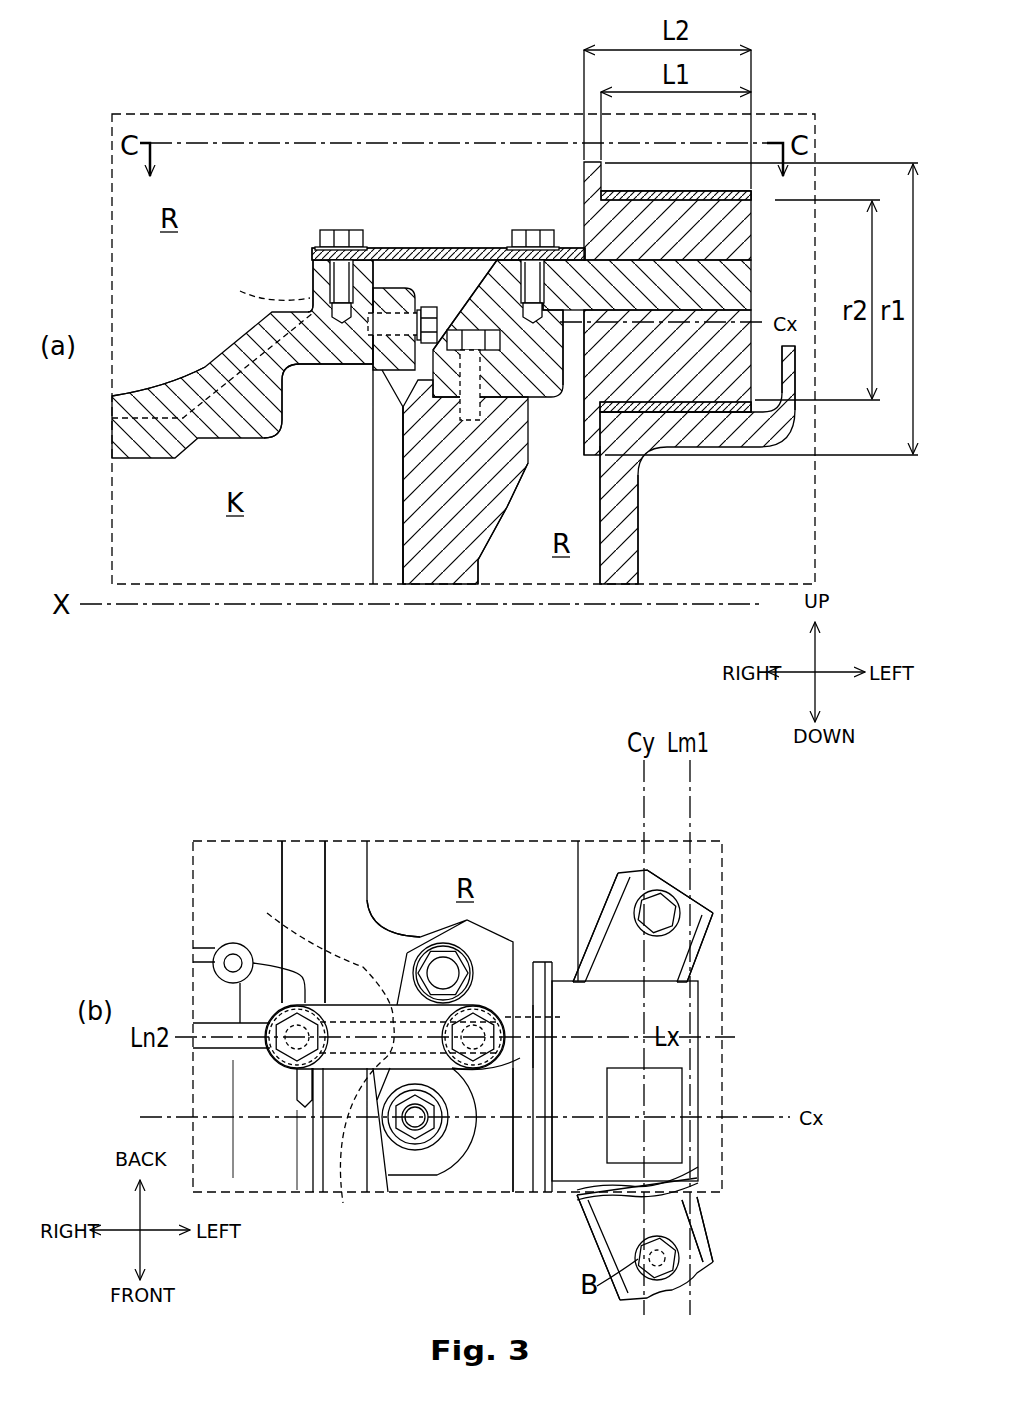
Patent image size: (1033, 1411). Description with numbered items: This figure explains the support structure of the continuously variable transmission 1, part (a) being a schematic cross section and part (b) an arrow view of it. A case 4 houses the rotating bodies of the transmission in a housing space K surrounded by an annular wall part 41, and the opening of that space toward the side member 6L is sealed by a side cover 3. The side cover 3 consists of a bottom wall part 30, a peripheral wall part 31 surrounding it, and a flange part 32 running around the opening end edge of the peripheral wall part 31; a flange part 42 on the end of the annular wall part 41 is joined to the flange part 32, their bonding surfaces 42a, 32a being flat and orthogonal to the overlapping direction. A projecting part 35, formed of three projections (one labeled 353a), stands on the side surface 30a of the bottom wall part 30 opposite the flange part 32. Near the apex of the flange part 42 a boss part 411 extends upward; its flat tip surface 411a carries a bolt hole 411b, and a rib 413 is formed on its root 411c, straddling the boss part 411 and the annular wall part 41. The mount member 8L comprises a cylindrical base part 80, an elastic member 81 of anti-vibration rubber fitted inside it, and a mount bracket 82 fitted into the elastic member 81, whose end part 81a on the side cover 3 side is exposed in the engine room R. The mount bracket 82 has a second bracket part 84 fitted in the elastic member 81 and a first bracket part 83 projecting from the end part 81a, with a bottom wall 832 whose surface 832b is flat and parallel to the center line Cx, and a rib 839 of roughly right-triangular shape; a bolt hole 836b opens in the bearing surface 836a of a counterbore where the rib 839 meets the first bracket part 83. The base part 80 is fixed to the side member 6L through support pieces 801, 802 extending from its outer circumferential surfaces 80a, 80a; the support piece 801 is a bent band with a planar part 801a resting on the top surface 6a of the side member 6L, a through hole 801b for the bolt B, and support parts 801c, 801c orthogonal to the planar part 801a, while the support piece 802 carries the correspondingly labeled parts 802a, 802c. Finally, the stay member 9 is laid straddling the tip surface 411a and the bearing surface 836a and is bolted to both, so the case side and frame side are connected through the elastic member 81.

The continuously variable transmission 1 is at (262, 110).
The side cover 3 is at (417, 586).
The case 4 is at (272, 586).
The top surface 6a is at (722, 386).
The side member 6L is at (628, 586).
The mount member 8L is at (700, 1023).
The stay member 9 is at (462, 249).
The bottom wall part 30 is at (373, 486).
The side surface 30a is at (477, 584).
The peripheral wall part 31 is at (400, 410).
The flange part 32 is at (396, 300).
The bonding surface 32a is at (400, 306).
The projecting part 35 is at (511, 512).
The annular wall part 41 is at (142, 435).
The flange part 42 is at (303, 852).
The bonding surface 42a is at (388, 366).
The base part 80 is at (677, 449).
The outer circumferential surface 80a is at (625, 981).
The elastic member 81 is at (742, 236).
The end part 81a is at (584, 218).
The mount bracket 82 is at (700, 366).
The first bracket part 83 is at (572, 336).
The second bracket part 84 is at (668, 318).
The bolt 353a is at (472, 422).
The boss part 411 is at (313, 283).
The tip surface 411a is at (356, 231).
The bolt hole 411b is at (290, 1070).
The root 411c is at (247, 281).
The rib 413 is at (160, 400).
The support piece 801 is at (822, 1200).
The planar part 801a is at (693, 1257).
The through hole 801b is at (660, 1250).
The support part 801c is at (700, 1221).
The support piece 802 is at (822, 858).
The tab face 802a is at (686, 900).
The tab edge 802c is at (640, 875).
The bottom wall 832 is at (372, 376).
The surface 832b is at (548, 400).
The bearing surface 836a is at (573, 180).
The bolt hole 836b is at (538, 1021).
The rib 839 is at (267, 913).